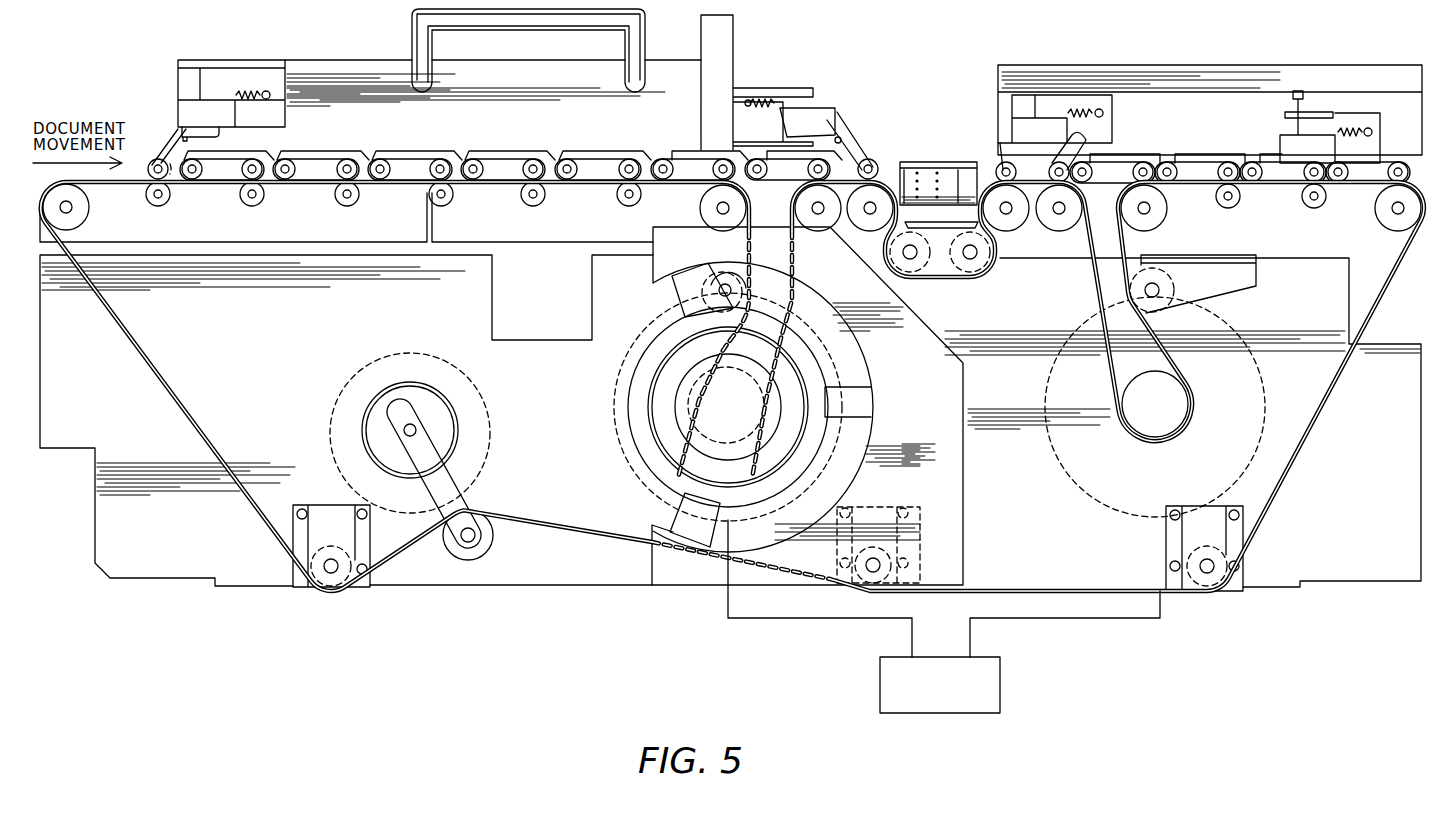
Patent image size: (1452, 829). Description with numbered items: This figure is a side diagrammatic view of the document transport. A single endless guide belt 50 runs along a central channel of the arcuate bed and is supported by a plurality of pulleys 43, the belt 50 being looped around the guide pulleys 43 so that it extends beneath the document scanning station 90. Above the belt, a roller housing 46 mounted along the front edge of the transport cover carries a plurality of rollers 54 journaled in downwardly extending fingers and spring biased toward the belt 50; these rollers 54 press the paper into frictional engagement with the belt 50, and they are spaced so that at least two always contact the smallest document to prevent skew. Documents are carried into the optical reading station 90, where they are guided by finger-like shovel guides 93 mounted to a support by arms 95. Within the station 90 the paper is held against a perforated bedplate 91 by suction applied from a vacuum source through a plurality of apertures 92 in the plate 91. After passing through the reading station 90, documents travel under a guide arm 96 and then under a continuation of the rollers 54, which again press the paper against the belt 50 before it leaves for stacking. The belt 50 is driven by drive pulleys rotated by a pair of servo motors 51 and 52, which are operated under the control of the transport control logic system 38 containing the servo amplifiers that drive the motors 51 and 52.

The transport control logic system 38 is at (1000, 686).
The pulleys 43 is at (853, 232).
The roller housing 46 is at (1172, 65).
The guide belt 50 is at (135, 337).
The servo motor 51 is at (617, 430).
The servo motor 52 is at (1047, 438).
The rollers 54 is at (778, 180).
The optical reading station 90 is at (929, 91).
The perforated bedplate 91 is at (955, 166).
The apertures 92 is at (919, 168).
The shovel guides 93 is at (889, 163).
The arms 95 is at (845, 137).
The guide arm 96 is at (993, 165).